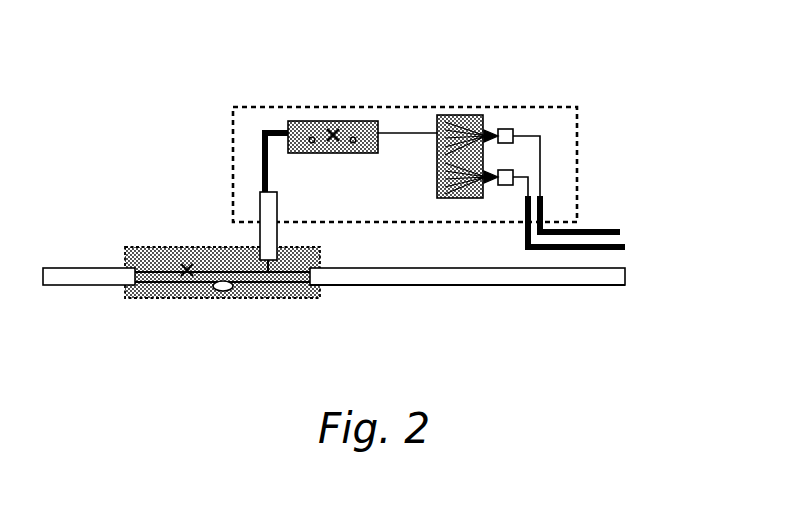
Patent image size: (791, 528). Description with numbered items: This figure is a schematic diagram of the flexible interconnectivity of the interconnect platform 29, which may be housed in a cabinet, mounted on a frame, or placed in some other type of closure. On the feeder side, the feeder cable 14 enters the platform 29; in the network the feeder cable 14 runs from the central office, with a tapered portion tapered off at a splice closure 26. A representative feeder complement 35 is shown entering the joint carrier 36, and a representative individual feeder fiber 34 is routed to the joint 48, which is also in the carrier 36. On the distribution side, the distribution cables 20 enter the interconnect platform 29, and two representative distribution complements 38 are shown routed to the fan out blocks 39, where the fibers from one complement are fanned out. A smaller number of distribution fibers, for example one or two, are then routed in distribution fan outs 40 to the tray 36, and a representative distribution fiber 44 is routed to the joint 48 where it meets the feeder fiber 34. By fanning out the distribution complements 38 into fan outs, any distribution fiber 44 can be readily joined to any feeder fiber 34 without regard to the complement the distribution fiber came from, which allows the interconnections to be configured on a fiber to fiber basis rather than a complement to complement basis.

The feeder cable 14 is at (260, 236).
The distribution cables 20 is at (597, 226).
The splice closure 26 is at (165, 298).
The interconnect platform 29 is at (577, 135).
The feeder fiber 34 is at (298, 153).
The feeder complement 35 is at (271, 128).
The joint carrier 36 is at (301, 122).
The distribution complements 38 is at (542, 189).
The fan out blocks 39 is at (511, 128).
The distribution fan outs 40 is at (412, 128).
The distribution fiber 44 is at (369, 122).
The joint 48 is at (338, 148).